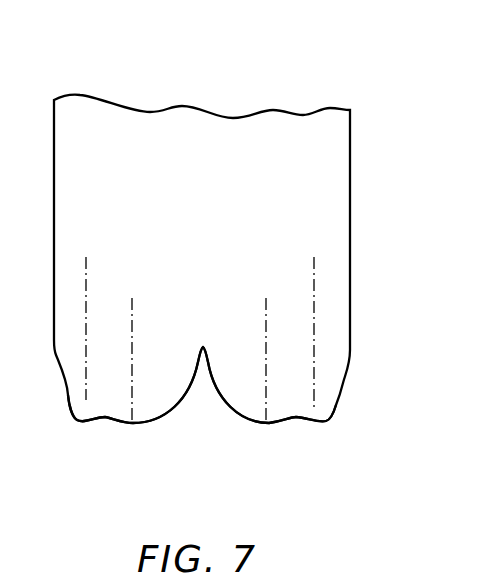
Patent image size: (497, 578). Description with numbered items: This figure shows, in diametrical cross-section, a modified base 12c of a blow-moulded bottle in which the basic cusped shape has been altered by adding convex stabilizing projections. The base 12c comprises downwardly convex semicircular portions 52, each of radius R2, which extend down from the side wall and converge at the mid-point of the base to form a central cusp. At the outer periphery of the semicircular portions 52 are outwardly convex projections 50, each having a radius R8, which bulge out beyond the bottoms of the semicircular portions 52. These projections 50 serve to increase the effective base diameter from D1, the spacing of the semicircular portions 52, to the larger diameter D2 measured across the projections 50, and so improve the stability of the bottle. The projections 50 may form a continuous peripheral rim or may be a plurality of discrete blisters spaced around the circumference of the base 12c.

The base 12c is at (357, 392).
The projections 50 is at (79, 422).
The semicircular portions 52 is at (137, 423).
The effective base diameter D1 is at (266, 313).
The increased effective base diameter D2 is at (314, 273).
The radius of semicircular portions R2 is at (153, 412).
The radius of projections R8 is at (78, 414).